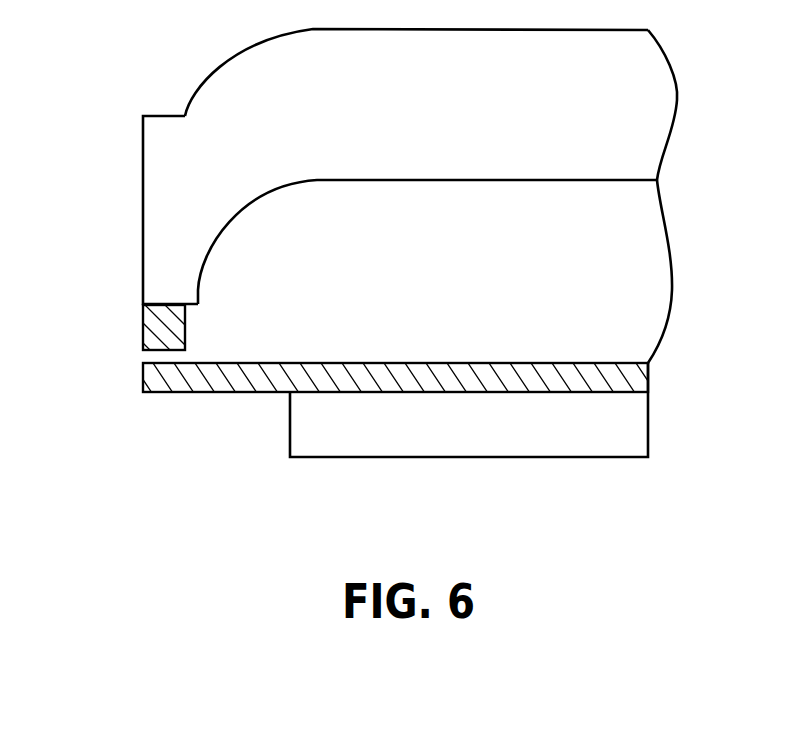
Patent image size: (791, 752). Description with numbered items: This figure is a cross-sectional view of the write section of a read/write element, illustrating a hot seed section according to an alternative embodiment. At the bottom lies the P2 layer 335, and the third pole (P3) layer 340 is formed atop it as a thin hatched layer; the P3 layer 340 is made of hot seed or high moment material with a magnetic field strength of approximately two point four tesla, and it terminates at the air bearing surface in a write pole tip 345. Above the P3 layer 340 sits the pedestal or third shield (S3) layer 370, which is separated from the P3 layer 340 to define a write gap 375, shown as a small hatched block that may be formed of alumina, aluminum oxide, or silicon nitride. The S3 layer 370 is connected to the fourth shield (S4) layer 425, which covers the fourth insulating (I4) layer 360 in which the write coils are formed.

The fourth shield (S4) layer 425 is at (485, 120).
The fourth insulating (I4) layer 360 is at (480, 278).
The third shield (S3) layer 370 is at (143, 187).
The write gap 375 is at (141, 354).
The write pole tip 345 is at (142, 378).
The third pole (P3) layer 340 is at (648, 367).
The P2 layer 335 is at (515, 436).